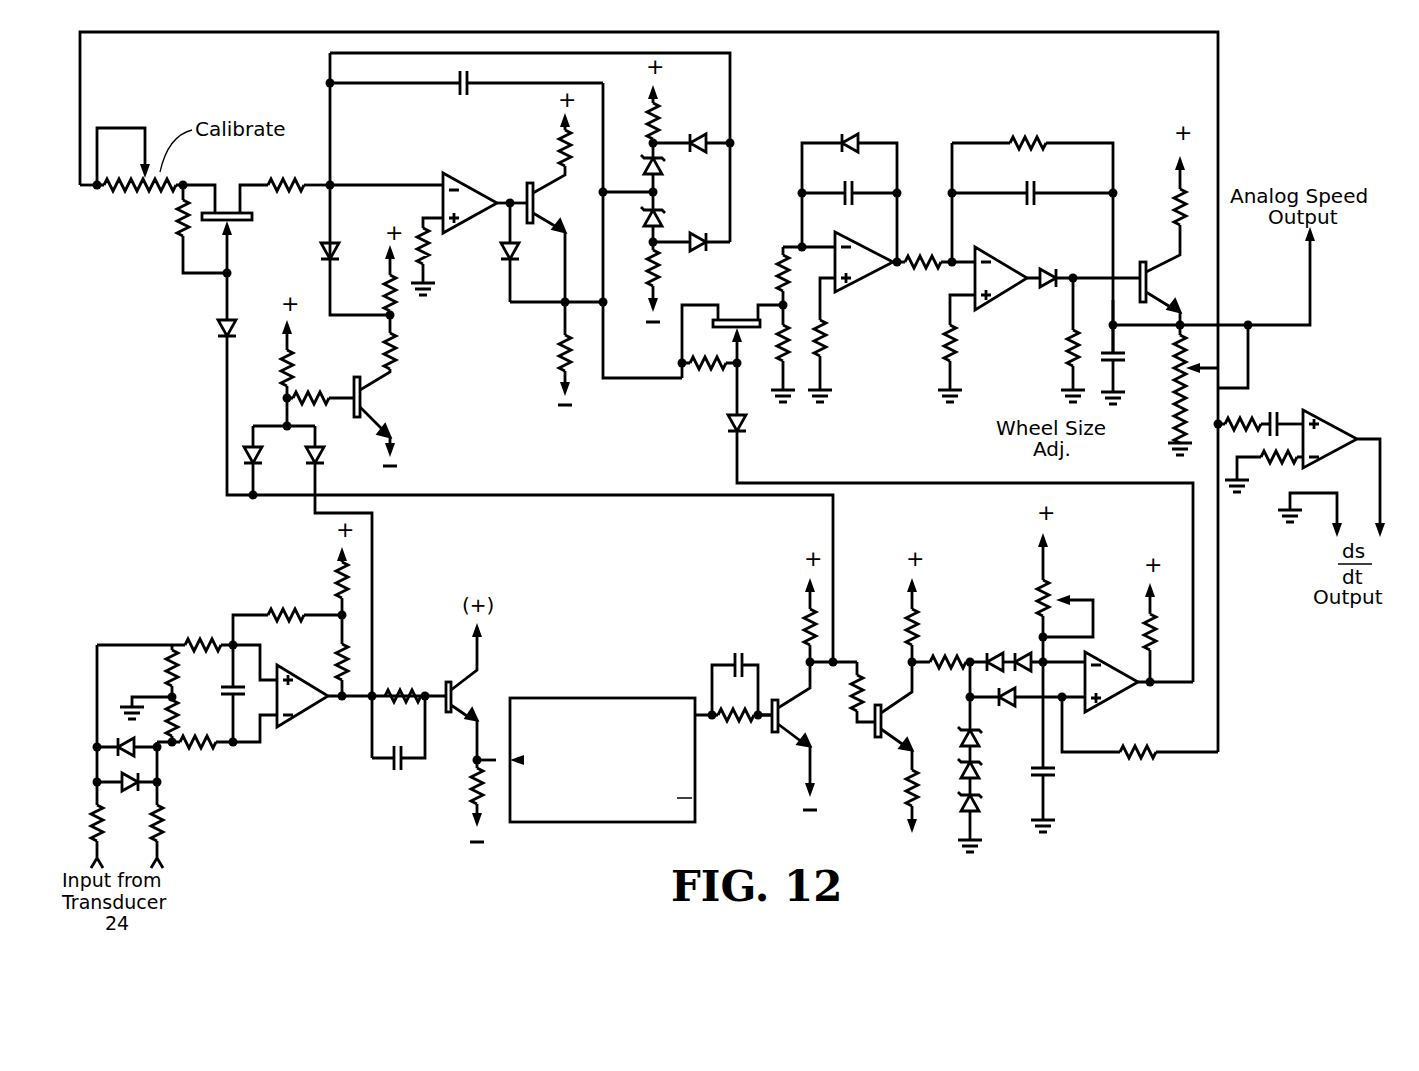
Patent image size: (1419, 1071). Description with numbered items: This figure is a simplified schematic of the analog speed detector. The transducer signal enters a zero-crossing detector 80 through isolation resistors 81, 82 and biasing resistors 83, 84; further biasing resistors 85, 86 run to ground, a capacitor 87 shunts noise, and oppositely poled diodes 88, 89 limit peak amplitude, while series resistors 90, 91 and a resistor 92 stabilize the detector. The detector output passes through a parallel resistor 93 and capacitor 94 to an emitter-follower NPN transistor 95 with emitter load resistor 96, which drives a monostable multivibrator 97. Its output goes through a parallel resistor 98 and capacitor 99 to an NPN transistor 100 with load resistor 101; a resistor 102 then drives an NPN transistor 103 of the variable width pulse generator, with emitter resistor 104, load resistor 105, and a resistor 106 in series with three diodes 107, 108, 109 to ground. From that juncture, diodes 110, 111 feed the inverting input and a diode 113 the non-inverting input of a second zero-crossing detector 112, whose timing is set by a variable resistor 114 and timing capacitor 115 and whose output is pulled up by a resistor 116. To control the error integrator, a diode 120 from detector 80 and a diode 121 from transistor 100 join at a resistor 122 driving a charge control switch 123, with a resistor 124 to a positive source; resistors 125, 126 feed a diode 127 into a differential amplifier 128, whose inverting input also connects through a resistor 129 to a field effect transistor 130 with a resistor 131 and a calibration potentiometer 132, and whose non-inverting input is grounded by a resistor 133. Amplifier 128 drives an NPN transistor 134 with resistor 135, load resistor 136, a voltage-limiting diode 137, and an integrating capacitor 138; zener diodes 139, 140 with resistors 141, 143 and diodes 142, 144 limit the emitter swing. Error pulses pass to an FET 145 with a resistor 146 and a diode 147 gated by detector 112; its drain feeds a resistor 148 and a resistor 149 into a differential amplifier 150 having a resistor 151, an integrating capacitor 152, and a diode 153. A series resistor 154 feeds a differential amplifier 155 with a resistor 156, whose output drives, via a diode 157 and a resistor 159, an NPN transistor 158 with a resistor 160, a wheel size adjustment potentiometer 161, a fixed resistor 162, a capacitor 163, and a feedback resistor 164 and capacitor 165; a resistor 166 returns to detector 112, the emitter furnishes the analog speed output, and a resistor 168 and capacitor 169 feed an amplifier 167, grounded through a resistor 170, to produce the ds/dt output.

The zero-crossing detector 80 is at (304, 712).
The isolation resistor 81 is at (100, 830).
The isolation resistor 82 is at (160, 830).
The biasing resistor 83 is at (210, 638).
The biasing resistor 84 is at (206, 750).
The biasing resistor 85 is at (170, 672).
The biasing resistor 86 is at (175, 715).
The capacitor 87 is at (228, 686).
The diode 88 is at (120, 742).
The diode 89 is at (128, 788).
The series resistor 90 is at (338, 650).
The series resistor 91 is at (337, 590).
The resistor 92 is at (290, 612).
The resistor 93 is at (400, 688).
The capacitor 94 is at (392, 766).
The NPN transistor 95 is at (455, 692).
The emitter load resistor 96 is at (470, 785).
The monostable multivibrator 97 is at (588, 697).
The resistor 98 is at (730, 722).
The capacitor 99 is at (731, 655).
The NPN transistor 100 is at (780, 715).
The load resistor 101 is at (806, 624).
The resistor 102 is at (863, 680).
The NPN transistor 103 is at (882, 716).
The resistor 104 is at (908, 778).
The load resistor 105 is at (908, 623).
The resistor 106 is at (945, 657).
The diode 107 is at (977, 736).
The diode 108 is at (977, 770).
The diode 109 is at (976, 804).
The diode 110 is at (992, 655).
The diode 111 is at (1020, 655).
The second zero-crossing detector 112 is at (1104, 702).
The diode 113 is at (1005, 700).
The variable resistor 114 is at (1048, 582).
The timing capacitor 115 is at (1047, 776).
The resistor 116 is at (1146, 630).
The diode 120 is at (322, 456).
The diode 121 is at (250, 442).
The diode 122 is at (218, 329).
The charge control switch 123 is at (372, 397).
The resistor 124 is at (284, 363).
The resistor 125 is at (392, 355).
The resistor 126 is at (388, 292).
The diode 127 is at (322, 256).
The differential amplifier 128 is at (485, 187).
The resistor 129 is at (306, 182).
The field effect transistor 130 is at (233, 225).
The resistor 131 is at (176, 238).
The calibration potentiometer 132 is at (130, 191).
The resistor 133 is at (421, 226).
The NPN transistor 134 is at (536, 209).
The resistor 135 is at (557, 353).
The load resistor 136 is at (556, 149).
The voltage-limiting diode 137 is at (498, 254).
The integrating capacitor 138 is at (458, 96).
The zener diode 139 is at (664, 171).
The zener diode 140 is at (664, 222).
The resistor 141 is at (658, 98).
The diode 142 is at (696, 136).
The resistor 143 is at (654, 280).
The diode 144 is at (698, 250).
The FET 145 is at (736, 318).
The resistor 146 is at (692, 368).
The diode 147 is at (726, 425).
The resistor 148 is at (781, 372).
The resistor 149 is at (780, 263).
The differential amplifier 150 is at (873, 239).
The resistor 151 is at (825, 342).
The integrating capacitor 152 is at (843, 186).
The diode 153 is at (849, 138).
The series resistor 154 is at (919, 268).
The differential amplifier 155 is at (1000, 305).
The resistor 156 is at (948, 351).
The diode 157 is at (1049, 272).
The NPN transistor 158 is at (1148, 281).
The resistor 159 is at (1068, 355).
The resistor 160 is at (1177, 205).
The wheel size adjustment potentiometer 161 is at (1116, 350).
The fixed resistor 162 is at (1172, 426).
The capacitor 163 is at (1117, 360).
The resistor 164 is at (1013, 141).
The capacitor 165 is at (1036, 190).
The resistor 166 is at (1135, 760).
The amplifier 167 is at (1345, 432).
The resistor 168 is at (1248, 418).
The capacitor 169 is at (1288, 412).
The resistor 170 is at (1265, 467).